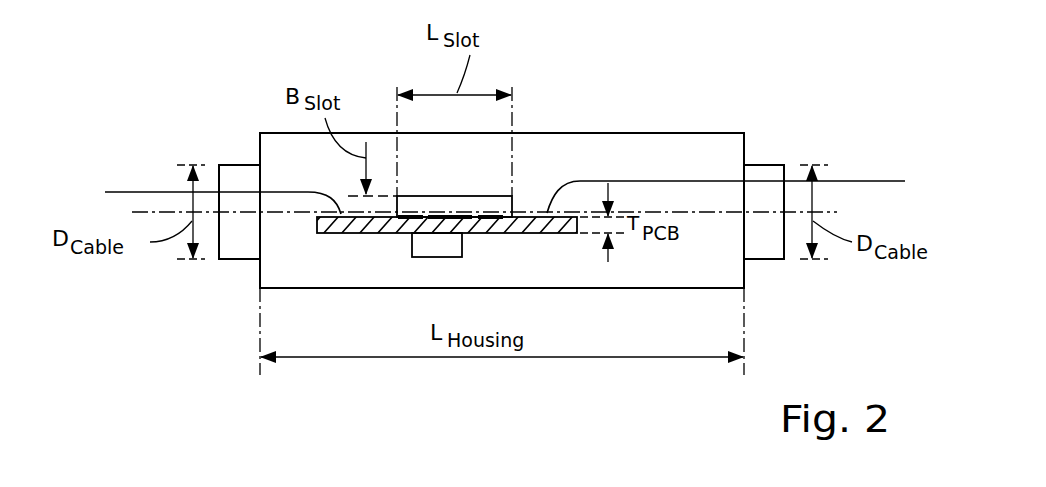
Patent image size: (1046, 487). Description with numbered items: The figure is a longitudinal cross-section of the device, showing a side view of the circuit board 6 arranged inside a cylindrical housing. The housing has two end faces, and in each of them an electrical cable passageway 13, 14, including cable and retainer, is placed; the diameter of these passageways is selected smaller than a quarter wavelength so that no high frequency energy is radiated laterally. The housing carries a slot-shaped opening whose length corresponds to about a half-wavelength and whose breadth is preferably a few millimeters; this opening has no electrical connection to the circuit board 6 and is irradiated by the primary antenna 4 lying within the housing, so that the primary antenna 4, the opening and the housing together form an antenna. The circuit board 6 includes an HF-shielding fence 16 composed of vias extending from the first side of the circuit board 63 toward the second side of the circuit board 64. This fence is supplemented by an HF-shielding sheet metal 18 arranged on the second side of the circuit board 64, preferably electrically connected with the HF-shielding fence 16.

The primary antenna 4 is at (451, 210).
The circuit board 6 is at (309, 229).
The electrical cable passageway 13 is at (238, 129).
The electrical cable passageway 14 is at (759, 130).
The HF-shielding fence 16 is at (414, 210).
The HF-shielding sheet metal 18 is at (451, 261).
The first side of the circuit board 63 is at (343, 194).
The second side of the circuit board 64 is at (333, 239).